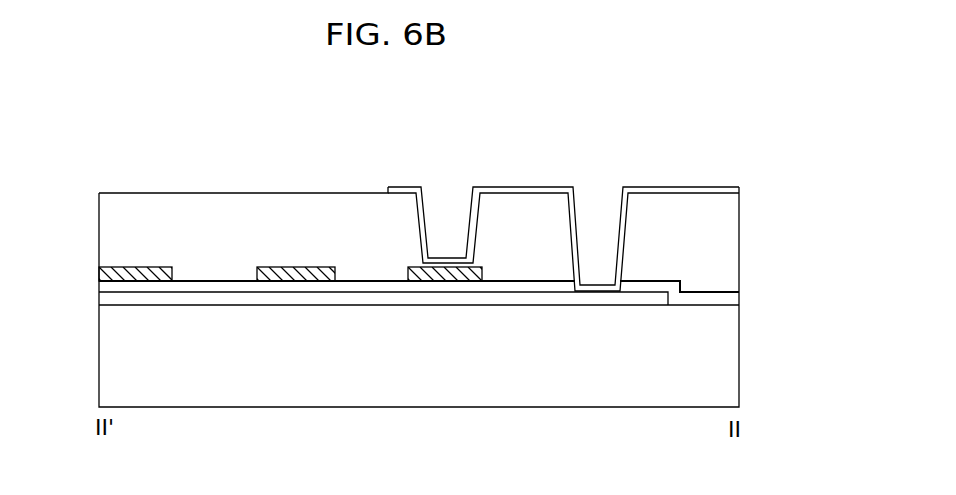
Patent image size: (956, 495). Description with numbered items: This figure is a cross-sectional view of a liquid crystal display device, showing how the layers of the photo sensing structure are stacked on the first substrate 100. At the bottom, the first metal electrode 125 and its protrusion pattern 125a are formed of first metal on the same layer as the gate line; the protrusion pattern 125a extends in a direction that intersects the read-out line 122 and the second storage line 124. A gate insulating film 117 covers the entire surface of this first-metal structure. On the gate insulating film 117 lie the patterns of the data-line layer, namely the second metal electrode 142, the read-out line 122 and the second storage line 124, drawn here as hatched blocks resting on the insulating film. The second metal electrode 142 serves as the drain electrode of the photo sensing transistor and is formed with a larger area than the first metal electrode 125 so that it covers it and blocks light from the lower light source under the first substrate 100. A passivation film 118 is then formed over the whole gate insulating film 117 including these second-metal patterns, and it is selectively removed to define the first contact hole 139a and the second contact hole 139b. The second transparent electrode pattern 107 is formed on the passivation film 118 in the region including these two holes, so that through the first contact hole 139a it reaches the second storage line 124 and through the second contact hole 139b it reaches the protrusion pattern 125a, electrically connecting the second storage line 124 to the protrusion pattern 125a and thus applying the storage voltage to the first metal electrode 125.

The first substrate 100 is at (727, 355).
The second transparent electrode pattern 107 is at (525, 193).
The gate insulating film 117 is at (727, 300).
The passivation film 118 is at (727, 233).
The read-out line 122 is at (295, 281).
The second storage line 124 is at (445, 281).
The first metal electrode 125 is at (105, 300).
The protrusion pattern 125a is at (597, 292).
The first contact hole 139a is at (450, 196).
The second contact hole 139b is at (600, 198).
The second metal electrode 142 is at (150, 281).